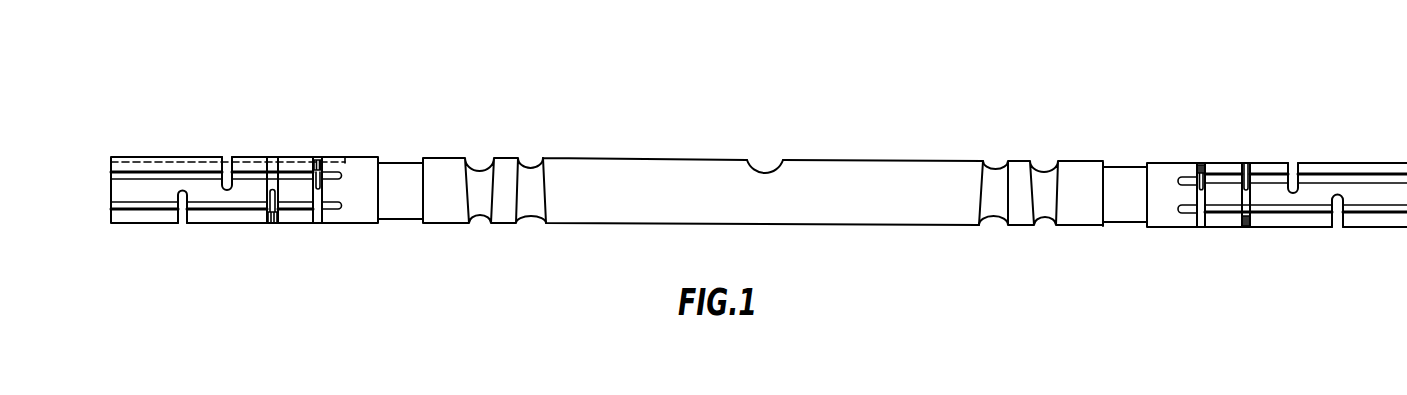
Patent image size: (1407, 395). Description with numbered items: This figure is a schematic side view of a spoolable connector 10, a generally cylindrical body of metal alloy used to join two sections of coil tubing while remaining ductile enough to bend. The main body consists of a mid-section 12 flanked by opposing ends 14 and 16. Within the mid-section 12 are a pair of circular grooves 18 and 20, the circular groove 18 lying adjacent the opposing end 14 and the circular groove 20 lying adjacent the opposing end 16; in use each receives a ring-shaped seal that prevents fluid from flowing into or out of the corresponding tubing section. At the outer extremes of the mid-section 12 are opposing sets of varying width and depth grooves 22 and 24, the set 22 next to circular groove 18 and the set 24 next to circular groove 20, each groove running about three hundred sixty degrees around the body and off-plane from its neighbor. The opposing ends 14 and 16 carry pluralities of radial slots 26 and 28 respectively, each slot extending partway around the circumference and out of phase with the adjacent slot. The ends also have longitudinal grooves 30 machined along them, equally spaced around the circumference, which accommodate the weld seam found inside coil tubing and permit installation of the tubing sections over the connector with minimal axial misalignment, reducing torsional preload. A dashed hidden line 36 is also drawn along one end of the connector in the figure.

The spoolable connector 10 is at (755, 135).
The mid-section 12 is at (848, 160).
The opposing end 14 is at (1375, 162).
The opposing end 16 is at (247, 157).
The circular groove 18 is at (1123, 157).
The circular groove 20 is at (416, 153).
The set of varying width and depth grooves 22 is at (992, 148).
The set of varying width and depth grooves 24 is at (546, 115).
The radial slots 26 is at (1246, 107).
The radial slots 28 is at (321, 137).
The longitudinal grooves 30 is at (1360, 186).
The inner sleeve (hidden) 36 is at (148, 157).